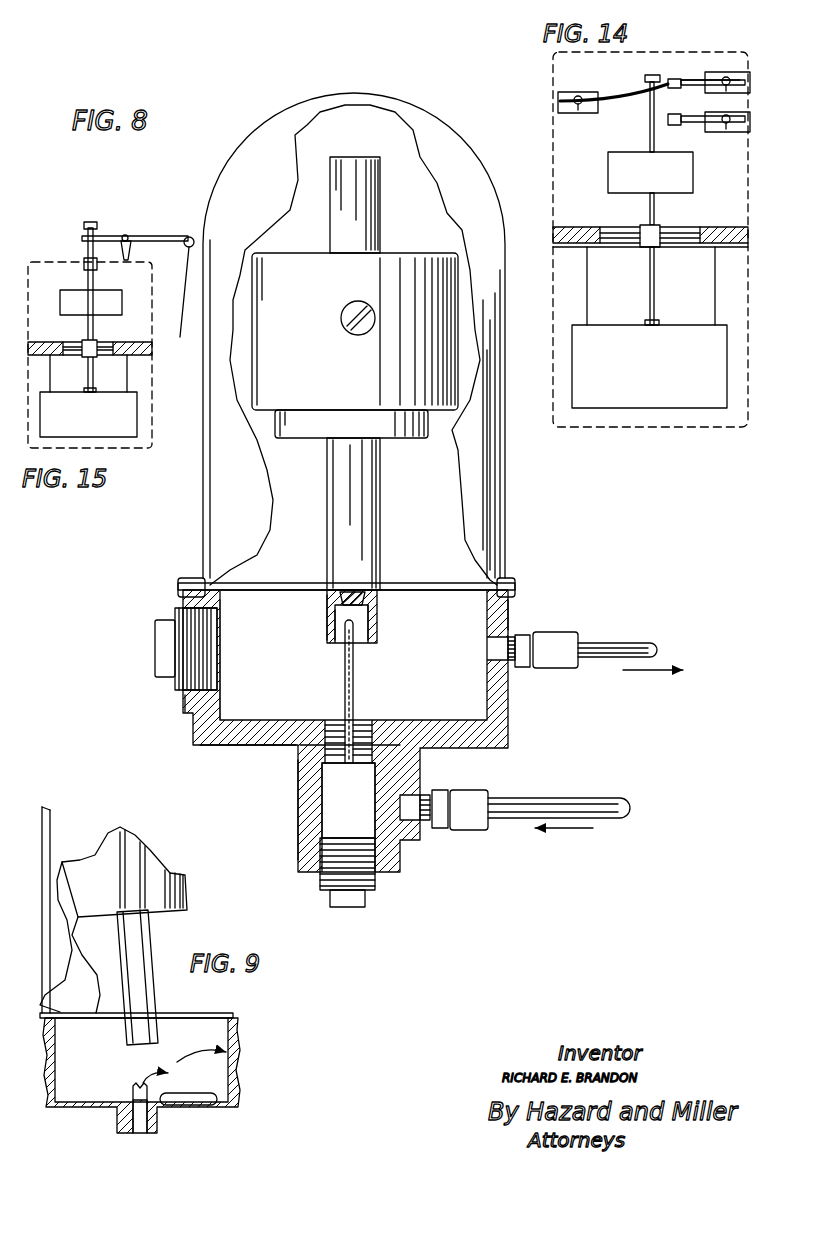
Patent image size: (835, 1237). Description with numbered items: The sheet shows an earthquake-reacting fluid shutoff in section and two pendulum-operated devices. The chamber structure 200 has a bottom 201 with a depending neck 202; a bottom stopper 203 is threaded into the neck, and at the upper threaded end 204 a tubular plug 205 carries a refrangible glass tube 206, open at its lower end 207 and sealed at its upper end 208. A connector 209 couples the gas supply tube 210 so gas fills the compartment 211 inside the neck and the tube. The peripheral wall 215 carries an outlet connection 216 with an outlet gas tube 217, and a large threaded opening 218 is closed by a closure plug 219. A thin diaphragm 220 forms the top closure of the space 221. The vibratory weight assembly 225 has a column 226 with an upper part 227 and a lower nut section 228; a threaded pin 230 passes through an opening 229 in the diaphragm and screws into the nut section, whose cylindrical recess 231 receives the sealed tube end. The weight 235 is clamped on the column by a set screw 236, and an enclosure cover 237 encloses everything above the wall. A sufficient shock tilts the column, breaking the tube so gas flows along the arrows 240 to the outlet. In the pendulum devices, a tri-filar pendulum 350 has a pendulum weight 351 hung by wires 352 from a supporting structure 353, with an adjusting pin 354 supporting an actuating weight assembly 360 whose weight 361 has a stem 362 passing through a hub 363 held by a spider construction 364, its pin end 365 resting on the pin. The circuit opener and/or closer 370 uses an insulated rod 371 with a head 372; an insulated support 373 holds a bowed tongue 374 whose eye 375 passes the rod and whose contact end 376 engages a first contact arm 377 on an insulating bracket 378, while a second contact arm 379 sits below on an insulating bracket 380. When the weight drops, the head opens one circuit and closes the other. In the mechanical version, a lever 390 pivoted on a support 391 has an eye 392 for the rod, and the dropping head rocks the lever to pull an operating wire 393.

In FIG. 8, the chamber structure 200 is at (512, 715).
In FIG. 8, the bottom 201 is at (265, 742).
In FIG. 8, the depending neck 202 is at (308, 806).
In FIG. 8, the bottom stopper 203 is at (372, 878).
In FIG. 8, the upper threaded end 204 is at (392, 732).
In FIG. 8, the tubular plug 205 is at (331, 725).
In FIG. 8, the refrangible tube 206 is at (356, 690).
In FIG. 9, the refrangible tube 206 is at (192, 1104).
In FIG. 8, the lower end 207 is at (351, 762).
In FIG. 8, the upper end 208 is at (362, 617).
In FIG. 8, the connector 209 is at (420, 802).
In FIG. 8, the gas supply tube 210 is at (515, 823).
In FIG. 8, the compartment 211 is at (368, 839).
In FIG. 8, the peripheral wall 215 is at (510, 617).
In FIG. 8, the outlet connection 216 is at (522, 641).
In FIG. 8, the outlet gas tube 217 is at (624, 644).
In FIG. 8, the threaded opening 218 is at (190, 701).
In FIG. 8, the closure plug 219 is at (200, 643).
In FIG. 8, the diaphragm 220 is at (265, 585).
In FIG. 9, the diaphragm 220 is at (183, 1013).
In FIG. 8, the space 221 is at (286, 669).
In FIG. 9, the space 221 is at (106, 1084).
In FIG. 8, the vibratory weight assembly 225 is at (272, 474).
In FIG. 8, the column 226 is at (383, 500).
In FIG. 9, the column 226 is at (153, 941).
In FIG. 8, the upper part 227 is at (333, 552).
In FIG. 8, the nut section 228 is at (330, 602).
In FIG. 8, the opening 229 is at (355, 591).
In FIG. 8, the threaded pin 230 is at (365, 600).
In FIG. 8, the cylindrical recess 231 is at (341, 623).
In FIG. 8, the weight 235 is at (320, 307).
In FIG. 9, the weight 235 is at (132, 902).
In FIG. 8, the set screw 236 is at (352, 338).
In FIG. 8, the enclosure cover 237 is at (205, 555).
In FIG. 9, the arrows 240 is at (184, 1058).
In FIG. 14, the tri-filar pendulum 350 is at (733, 309).
In FIG. 15, the pendulum weight 351 is at (103, 424).
In FIG. 14, the pendulum weight 351 is at (665, 376).
In FIG. 14, the wires 352 is at (716, 273).
In FIG. 14, the supporting structure 353 is at (717, 225).
In FIG. 14, the adjusting pin 354 is at (655, 300).
In FIG. 14, the actuating weight assembly 360 is at (590, 170).
In FIG. 15, the weight 361 is at (104, 311).
In FIG. 14, the weight 361 is at (665, 181).
In FIG. 14, the stem 362 is at (656, 210).
In FIG. 14, the hub 363 is at (641, 247).
In FIG. 14, the spider construction 364 is at (630, 232).
In FIG. 14, the pin end 365 is at (648, 268).
In FIG. 14, the electric circuit opener and/or closer 370 is at (566, 88).
In FIG. 15, the insulated rod 371 is at (88, 279).
In FIG. 14, the insulated rod 371 is at (650, 115).
In FIG. 15, the head 372 is at (86, 222).
In FIG. 14, the head 372 is at (654, 75).
In FIG. 14, the insulated support 373 is at (562, 112).
In FIG. 14, the tongue 374 is at (605, 100).
In FIG. 14, the eye 375 is at (648, 92).
In FIG. 14, the contact end 376 is at (684, 91).
In FIG. 14, the first contact arm 377 is at (680, 79).
In FIG. 14, the insulating bracket 378 is at (735, 72).
In FIG. 14, the second contact arm 379 is at (683, 125).
In FIG. 14, the insulating bracket 380 is at (714, 128).
In FIG. 15, the lever 390 is at (158, 236).
In FIG. 15, the support 391 is at (122, 235).
In FIG. 15, the eye 392 is at (82, 240).
In FIG. 15, the operating wire 393 is at (172, 300).